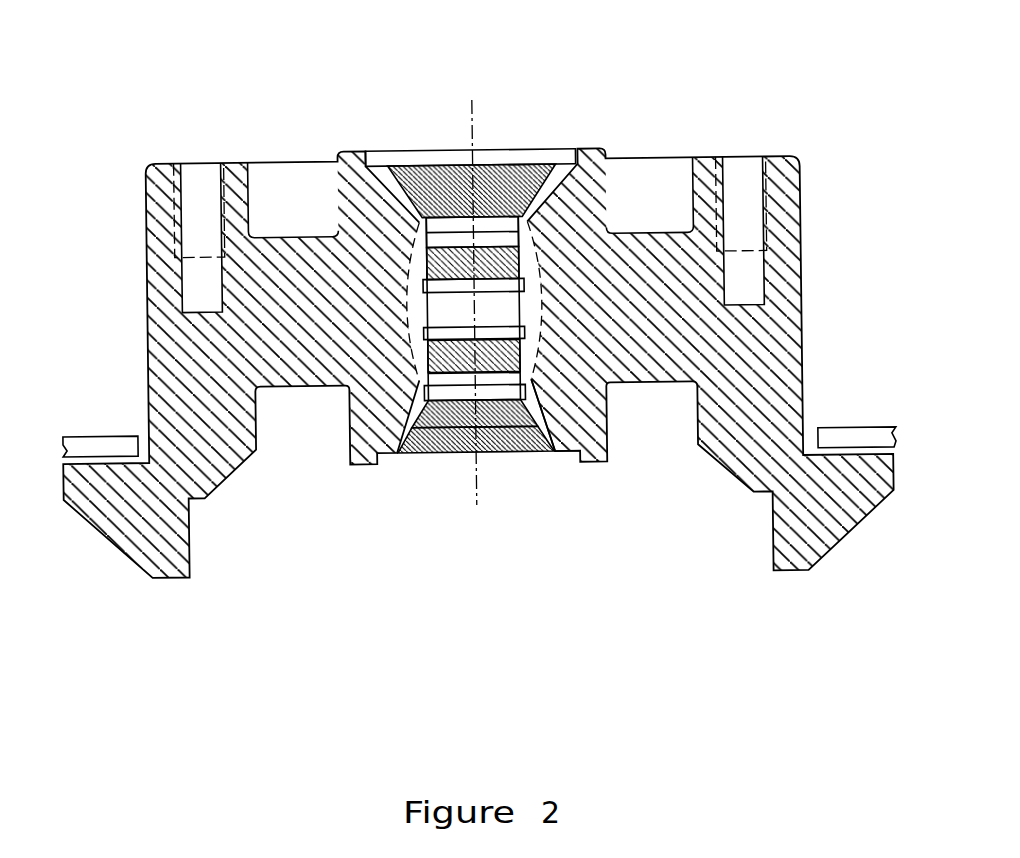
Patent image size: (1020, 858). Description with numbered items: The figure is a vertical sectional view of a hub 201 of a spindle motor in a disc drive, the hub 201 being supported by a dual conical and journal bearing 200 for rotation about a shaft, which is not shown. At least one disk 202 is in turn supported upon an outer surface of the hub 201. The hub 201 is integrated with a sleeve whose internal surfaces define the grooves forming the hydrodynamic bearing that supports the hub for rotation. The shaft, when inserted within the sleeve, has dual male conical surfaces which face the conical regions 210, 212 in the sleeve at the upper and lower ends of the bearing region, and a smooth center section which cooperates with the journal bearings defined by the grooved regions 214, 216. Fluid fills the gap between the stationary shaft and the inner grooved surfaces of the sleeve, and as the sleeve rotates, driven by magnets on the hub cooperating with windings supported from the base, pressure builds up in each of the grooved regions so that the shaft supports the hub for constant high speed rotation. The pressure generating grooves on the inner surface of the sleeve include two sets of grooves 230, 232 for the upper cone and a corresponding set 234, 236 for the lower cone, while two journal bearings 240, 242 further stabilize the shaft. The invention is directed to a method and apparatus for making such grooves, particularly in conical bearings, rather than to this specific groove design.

The dual conical and journal bearing 200 is at (493, 178).
The hub 201 is at (795, 162).
The disk 202 is at (830, 429).
The conical region 210 is at (420, 167).
The conical region 212 is at (553, 454).
The grooved region 214 is at (424, 288).
The grooved region 216 is at (428, 368).
The set of grooves 230 is at (533, 166).
The set of grooves 232 is at (545, 208).
The set of grooves 234 is at (517, 445).
The set of grooves 236 is at (533, 450).
The journal bearing 240 is at (527, 284).
The journal bearing 242 is at (527, 358).